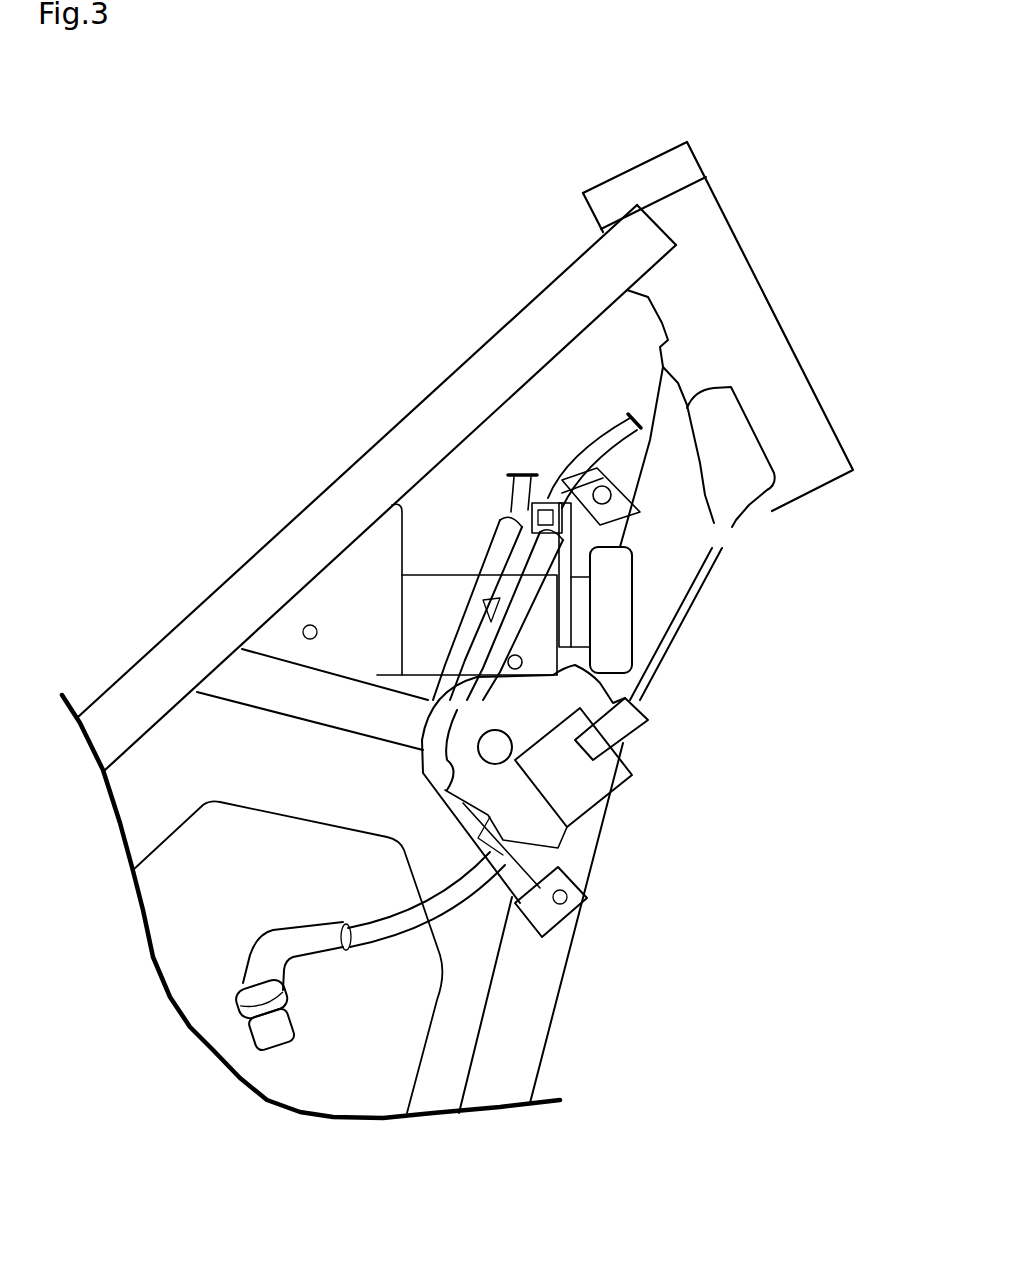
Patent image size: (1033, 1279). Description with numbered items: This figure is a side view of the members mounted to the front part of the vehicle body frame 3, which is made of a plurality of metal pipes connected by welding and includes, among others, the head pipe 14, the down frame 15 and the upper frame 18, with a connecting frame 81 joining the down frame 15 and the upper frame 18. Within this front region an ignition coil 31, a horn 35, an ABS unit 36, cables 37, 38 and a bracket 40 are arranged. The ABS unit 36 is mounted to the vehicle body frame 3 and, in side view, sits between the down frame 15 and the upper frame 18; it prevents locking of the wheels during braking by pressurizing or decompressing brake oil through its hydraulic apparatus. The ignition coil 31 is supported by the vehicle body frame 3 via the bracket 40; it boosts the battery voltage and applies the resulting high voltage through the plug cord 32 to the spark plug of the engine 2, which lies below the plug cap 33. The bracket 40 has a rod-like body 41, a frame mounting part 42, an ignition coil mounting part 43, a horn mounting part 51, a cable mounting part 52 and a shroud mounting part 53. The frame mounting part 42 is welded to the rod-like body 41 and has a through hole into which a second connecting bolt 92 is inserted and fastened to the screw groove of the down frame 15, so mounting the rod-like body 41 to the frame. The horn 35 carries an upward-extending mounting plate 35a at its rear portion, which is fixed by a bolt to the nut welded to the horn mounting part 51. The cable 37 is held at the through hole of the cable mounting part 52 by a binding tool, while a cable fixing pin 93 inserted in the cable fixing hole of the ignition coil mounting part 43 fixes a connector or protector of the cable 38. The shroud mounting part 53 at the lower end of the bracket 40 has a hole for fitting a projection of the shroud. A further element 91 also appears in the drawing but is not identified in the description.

The engine 2 is at (170, 937).
The vehicle body frame 3 is at (745, 188).
The head pipe 14 is at (737, 270).
The down frame 15 is at (535, 1037).
The upper frame 18 is at (262, 552).
The ignition coil 31 is at (625, 777).
The plug cord 32 is at (393, 927).
The plug cap 33 is at (263, 1030).
The horn 35 is at (627, 623).
The mounting plate 35a is at (565, 598).
The ABS unit 36 is at (440, 583).
The cable 37 is at (500, 537).
The cable 38 is at (622, 445).
The bracket 40 is at (690, 751).
The rod-like body 41 is at (412, 777).
The frame mounting part 42 is at (755, 512).
The ignition coil mounting part 43 is at (632, 700).
The horn mounting part 51 is at (640, 500).
The cable mounting part 52 is at (520, 472).
The shroud mounting part 53 is at (555, 915).
The connecting frame 81 is at (292, 660).
The bolt 91 is at (513, 743).
The second connecting bolt 92 is at (600, 482).
The cable fixing pin 93 is at (508, 660).